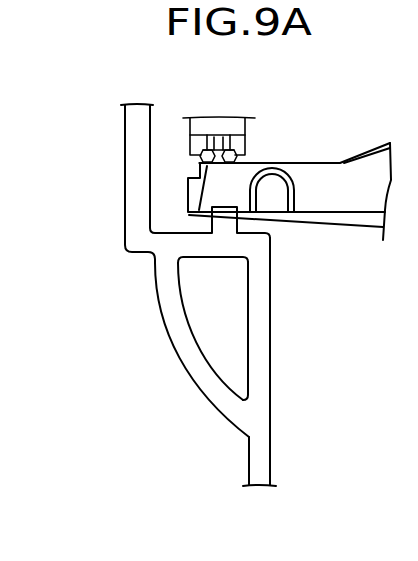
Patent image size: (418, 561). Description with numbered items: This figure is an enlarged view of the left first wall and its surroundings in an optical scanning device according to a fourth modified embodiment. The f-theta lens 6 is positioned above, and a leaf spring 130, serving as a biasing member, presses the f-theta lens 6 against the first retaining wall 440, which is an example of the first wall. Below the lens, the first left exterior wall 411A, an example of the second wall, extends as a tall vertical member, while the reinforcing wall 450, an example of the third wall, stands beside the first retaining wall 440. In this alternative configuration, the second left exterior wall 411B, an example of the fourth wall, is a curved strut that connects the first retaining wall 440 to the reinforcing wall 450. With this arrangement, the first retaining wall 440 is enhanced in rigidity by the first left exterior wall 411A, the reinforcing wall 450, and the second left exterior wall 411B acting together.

The first left exterior wall 411A is at (133, 164).
The second left exterior wall 411B is at (183, 352).
The leaf spring 130 is at (217, 125).
The f-theta lens 6 is at (328, 178).
The first retaining wall 440 is at (200, 249).
The reinforcing wall 450 is at (260, 325).